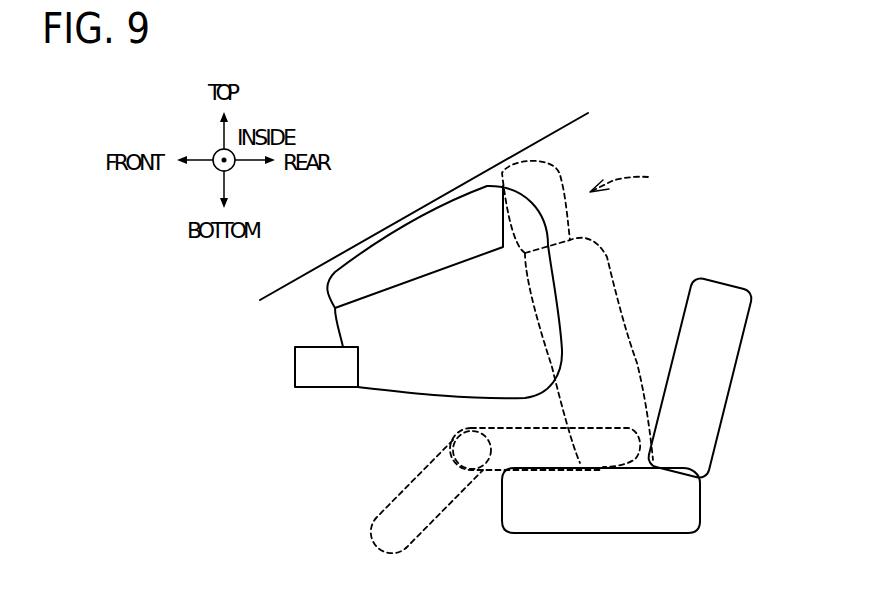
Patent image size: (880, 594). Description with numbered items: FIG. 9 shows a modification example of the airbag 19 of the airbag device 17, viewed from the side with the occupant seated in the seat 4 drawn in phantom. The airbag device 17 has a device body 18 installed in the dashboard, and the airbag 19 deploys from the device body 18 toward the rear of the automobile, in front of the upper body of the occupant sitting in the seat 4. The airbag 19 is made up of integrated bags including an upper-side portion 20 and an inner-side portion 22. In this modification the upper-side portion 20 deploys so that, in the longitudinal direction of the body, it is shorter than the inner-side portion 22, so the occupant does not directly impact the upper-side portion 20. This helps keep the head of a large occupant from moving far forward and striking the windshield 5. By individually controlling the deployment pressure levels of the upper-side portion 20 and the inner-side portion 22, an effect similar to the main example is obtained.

The seat 4 is at (685, 493).
The windshield 5 is at (457, 188).
The airbag device 17 is at (235, 400).
The device body 18 is at (322, 357).
The airbag 19 is at (303, 418).
The upper-side portion 20 is at (450, 372).
The inner-side portion 22 is at (453, 252).